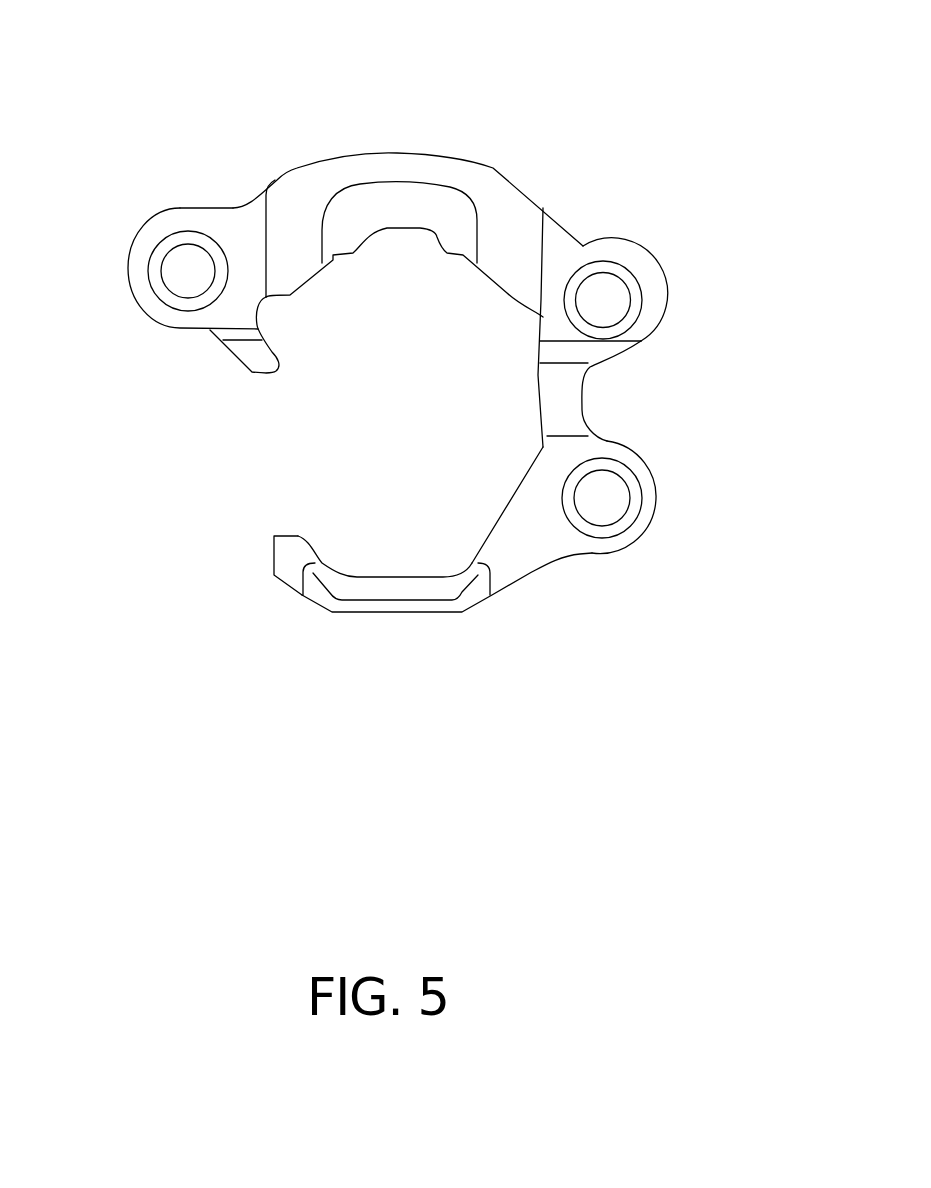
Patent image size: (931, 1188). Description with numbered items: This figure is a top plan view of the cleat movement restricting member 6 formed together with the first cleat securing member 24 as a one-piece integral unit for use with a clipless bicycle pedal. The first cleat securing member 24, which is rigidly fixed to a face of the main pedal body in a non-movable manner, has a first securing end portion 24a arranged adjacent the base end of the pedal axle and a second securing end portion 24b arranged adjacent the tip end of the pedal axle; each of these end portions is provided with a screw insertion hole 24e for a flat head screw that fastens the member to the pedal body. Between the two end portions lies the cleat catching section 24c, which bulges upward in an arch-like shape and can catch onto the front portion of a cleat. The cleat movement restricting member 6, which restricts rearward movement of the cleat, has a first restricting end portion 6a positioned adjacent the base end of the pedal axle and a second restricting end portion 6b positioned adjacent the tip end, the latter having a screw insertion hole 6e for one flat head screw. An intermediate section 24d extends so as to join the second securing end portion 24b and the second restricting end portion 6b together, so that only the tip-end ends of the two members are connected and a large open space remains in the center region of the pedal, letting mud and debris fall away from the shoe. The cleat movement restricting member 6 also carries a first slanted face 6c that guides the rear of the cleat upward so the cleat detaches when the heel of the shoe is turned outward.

The first cleat securing member 24 is at (503, 142).
The first securing end portion 24a is at (232, 226).
The second securing end portion 24b is at (570, 250).
The cleat catching section 24c is at (395, 198).
The intermediate section 24d is at (565, 397).
The screw insertion hole 24e is at (162, 273).
The cleat movement restricting member 6 is at (395, 637).
The first restricting end portion 6a is at (290, 570).
The second restricting end portion 6b is at (562, 537).
The first slanted face 6c is at (390, 590).
The mounting hole 6e is at (615, 518).